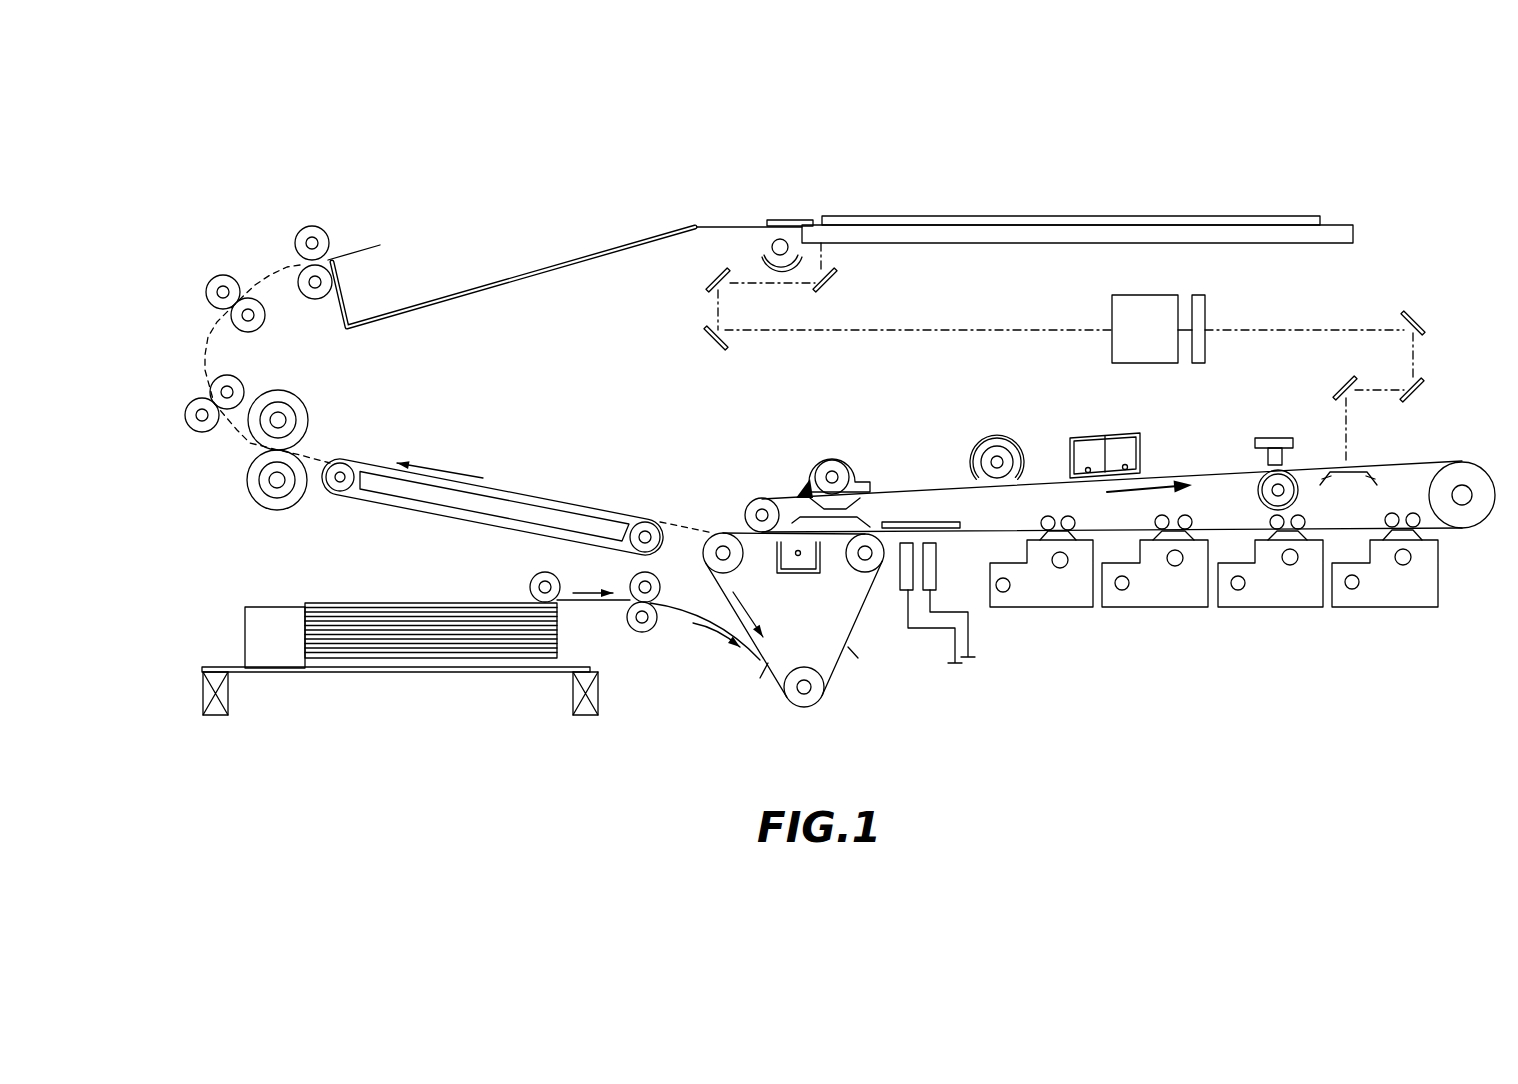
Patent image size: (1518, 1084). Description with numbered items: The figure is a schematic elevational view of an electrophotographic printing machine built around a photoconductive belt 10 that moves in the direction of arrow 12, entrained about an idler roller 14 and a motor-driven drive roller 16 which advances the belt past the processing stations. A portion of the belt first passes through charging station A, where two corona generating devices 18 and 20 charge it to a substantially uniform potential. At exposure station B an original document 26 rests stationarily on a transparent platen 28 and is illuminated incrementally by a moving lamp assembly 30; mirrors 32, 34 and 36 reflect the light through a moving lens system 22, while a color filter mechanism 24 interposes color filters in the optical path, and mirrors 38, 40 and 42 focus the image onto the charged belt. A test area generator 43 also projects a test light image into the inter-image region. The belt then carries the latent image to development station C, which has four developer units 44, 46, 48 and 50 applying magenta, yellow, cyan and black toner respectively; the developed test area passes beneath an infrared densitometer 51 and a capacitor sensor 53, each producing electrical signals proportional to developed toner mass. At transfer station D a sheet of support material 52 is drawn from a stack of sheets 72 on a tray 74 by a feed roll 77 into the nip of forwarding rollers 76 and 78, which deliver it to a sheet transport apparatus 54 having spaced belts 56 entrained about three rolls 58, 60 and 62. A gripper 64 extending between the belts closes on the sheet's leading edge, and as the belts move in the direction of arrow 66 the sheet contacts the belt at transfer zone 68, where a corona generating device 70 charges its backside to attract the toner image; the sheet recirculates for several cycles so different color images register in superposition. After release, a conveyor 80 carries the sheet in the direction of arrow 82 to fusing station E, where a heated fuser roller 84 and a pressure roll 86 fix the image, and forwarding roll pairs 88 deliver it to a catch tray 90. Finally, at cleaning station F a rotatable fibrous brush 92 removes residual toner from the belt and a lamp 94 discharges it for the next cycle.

The photoconductive belt 10 is at (937, 465).
The arrow 12 is at (1135, 492).
The idler roller 14 is at (753, 502).
The drive roller 16 is at (1467, 523).
The corona generating device 18 is at (1058, 435).
The corona generating device 20 is at (1152, 460).
The moving lens system 22 is at (1115, 310).
The color filter mechanism 24 is at (1206, 305).
The original document 26 is at (1280, 216).
The platen 28 is at (1325, 235).
The moving lamp assembly 30 is at (780, 239).
The mirror 32 is at (833, 276).
The mirror 34 is at (712, 277).
The mirror 36 is at (707, 341).
The mirror 38 is at (1418, 320).
The mirror 40 is at (1422, 393).
The mirror 42 is at (1342, 381).
The test area generator 43 is at (1275, 433).
The developer unit 44 is at (1392, 615).
The developer unit 46 is at (1272, 618).
The developer unit 48 is at (1168, 618).
The developer unit 50 is at (1062, 620).
The infrared densitometer 51 is at (952, 592).
The capacitor sensor 53 is at (897, 588).
The sheet of support material 52 is at (693, 608).
The sheet transport apparatus 54 is at (853, 688).
The spaced belts 56 is at (867, 666).
The roll 58 is at (817, 700).
The roll 60 is at (875, 533).
The roll 62 is at (723, 540).
The gripper 64 is at (748, 684).
The arrow 66 is at (758, 607).
The transfer zone 68 is at (800, 487).
The corona generating device 70 is at (810, 574).
The stack of sheets 72 is at (370, 605).
The tray 74 is at (440, 672).
The forwarding roller 76 is at (636, 582).
The feed roll 77 is at (535, 575).
The forwarding roller 78 is at (635, 630).
The conveyor 80 is at (538, 500).
The arrow 82 is at (448, 468).
The heated fuser roller 84 is at (300, 408).
The pressure roll 86 is at (262, 496).
The forwarding roll pairs 88 is at (338, 242).
The catch tray 90 is at (520, 275).
The fibrous brush 92 is at (832, 470).
The lamp 94 is at (987, 443).
The charging station A is at (1102, 423).
The exposure station B is at (1375, 458).
The development station C is at (1115, 683).
The transfer station D is at (783, 707).
The fusing station E is at (232, 472).
The cleaning station F is at (857, 450).